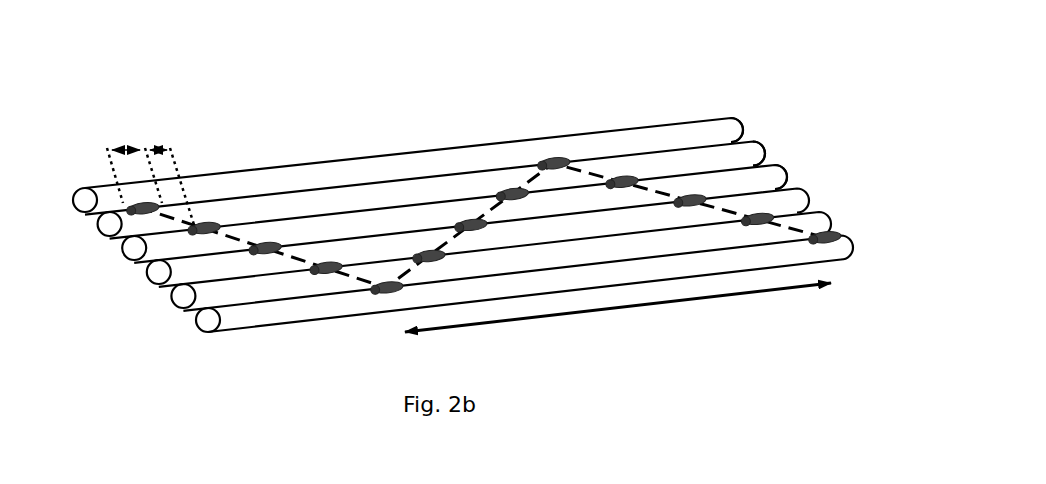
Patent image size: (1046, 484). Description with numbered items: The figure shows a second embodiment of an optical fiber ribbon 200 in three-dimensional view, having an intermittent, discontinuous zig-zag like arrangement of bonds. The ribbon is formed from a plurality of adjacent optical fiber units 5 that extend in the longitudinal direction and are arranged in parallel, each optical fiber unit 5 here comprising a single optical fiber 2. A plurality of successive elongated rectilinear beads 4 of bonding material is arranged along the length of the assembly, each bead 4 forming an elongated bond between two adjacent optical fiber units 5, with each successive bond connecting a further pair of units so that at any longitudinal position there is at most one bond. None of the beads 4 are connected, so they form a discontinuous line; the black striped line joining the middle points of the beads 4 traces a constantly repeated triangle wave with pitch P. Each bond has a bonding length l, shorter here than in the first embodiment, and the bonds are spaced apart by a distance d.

The optical fiber ribbon 200 is at (668, 70).
The optical fiber 2 is at (103, 228).
The bead 4 is at (223, 217).
The optical fiber unit 5 is at (756, 108).